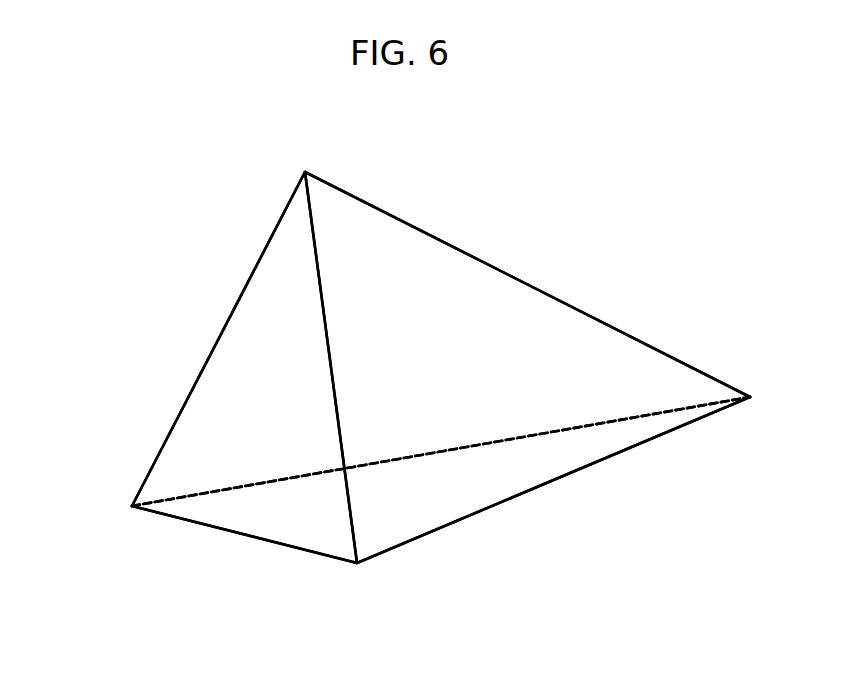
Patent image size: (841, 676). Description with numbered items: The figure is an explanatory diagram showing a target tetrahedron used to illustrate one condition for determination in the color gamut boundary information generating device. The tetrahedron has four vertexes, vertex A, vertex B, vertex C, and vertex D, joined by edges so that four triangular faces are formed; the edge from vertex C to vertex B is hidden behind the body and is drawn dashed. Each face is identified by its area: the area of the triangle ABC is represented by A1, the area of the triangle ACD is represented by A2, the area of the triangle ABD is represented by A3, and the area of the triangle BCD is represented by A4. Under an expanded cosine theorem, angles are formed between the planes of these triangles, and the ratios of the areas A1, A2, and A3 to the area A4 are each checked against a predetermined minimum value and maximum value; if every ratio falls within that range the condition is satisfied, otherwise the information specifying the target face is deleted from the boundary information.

The area of triangle ABC A1 is at (250, 373).
The area of triangle ACD A2 is at (457, 370).
The area of triangle ABD A3 is at (502, 252).
The area of triangle BCD A4 is at (282, 570).
The vertex A is at (305, 152).
The vertex B is at (765, 391).
The vertex C is at (122, 508).
The vertex D is at (360, 582).